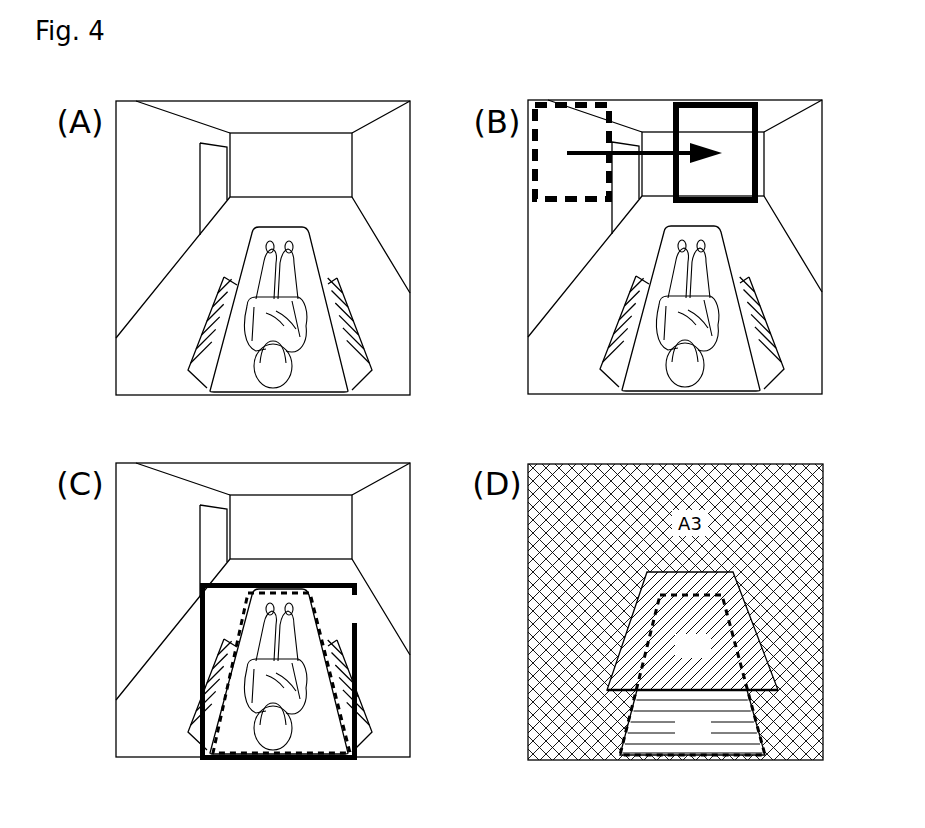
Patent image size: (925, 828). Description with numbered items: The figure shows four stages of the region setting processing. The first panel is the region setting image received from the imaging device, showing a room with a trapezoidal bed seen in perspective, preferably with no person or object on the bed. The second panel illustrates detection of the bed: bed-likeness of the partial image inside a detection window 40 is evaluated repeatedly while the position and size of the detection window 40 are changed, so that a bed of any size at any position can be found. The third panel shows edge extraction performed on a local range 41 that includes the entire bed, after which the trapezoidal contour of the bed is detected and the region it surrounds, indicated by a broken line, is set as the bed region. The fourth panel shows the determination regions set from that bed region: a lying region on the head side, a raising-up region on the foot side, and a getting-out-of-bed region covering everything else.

The detection window 40 is at (717, 102).
The local range 41 is at (313, 583).